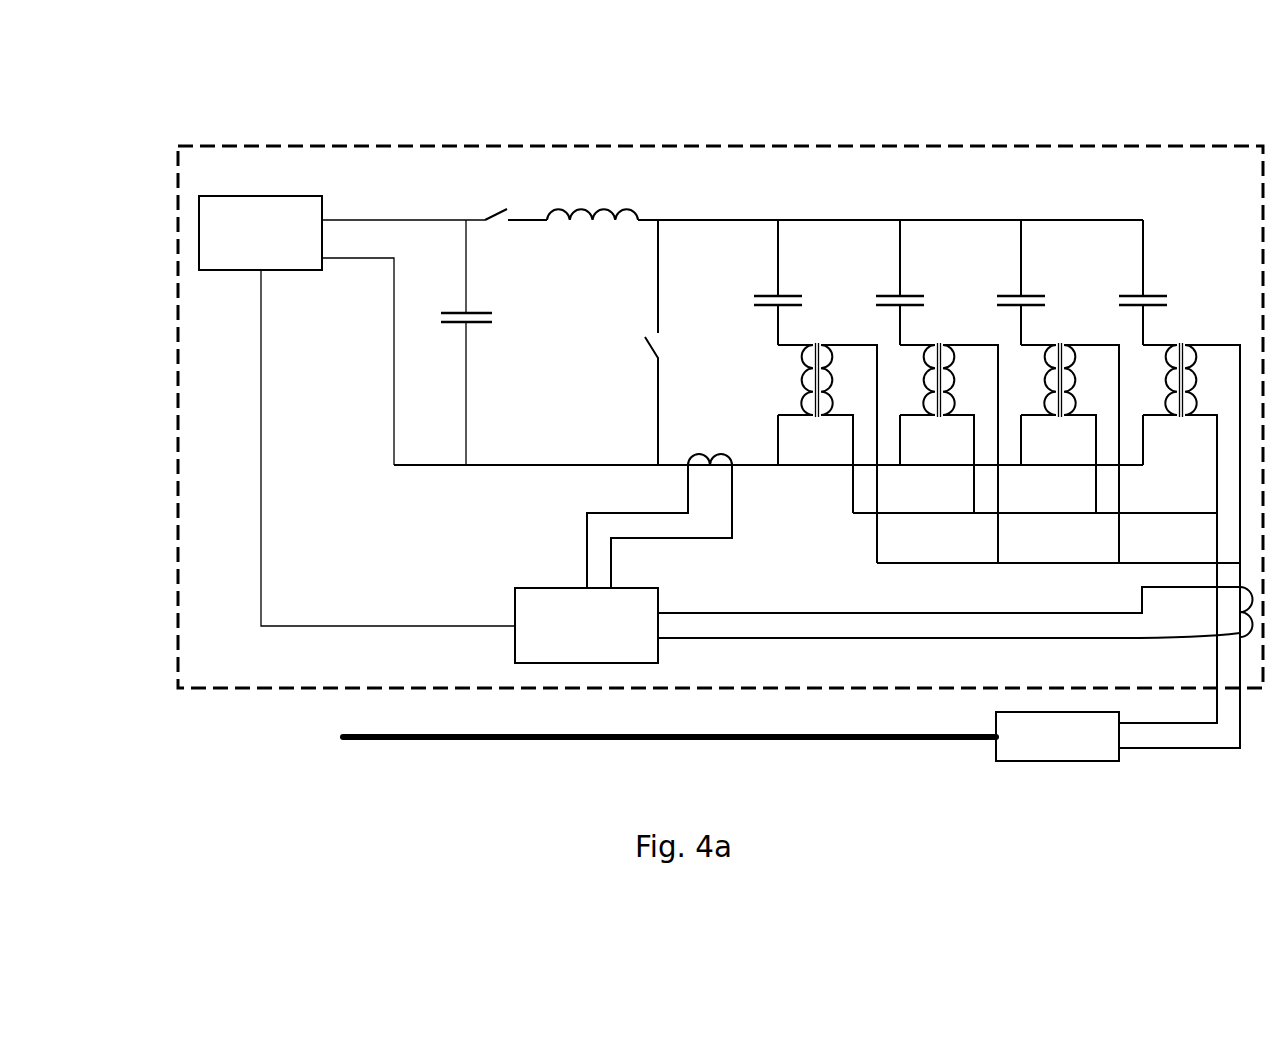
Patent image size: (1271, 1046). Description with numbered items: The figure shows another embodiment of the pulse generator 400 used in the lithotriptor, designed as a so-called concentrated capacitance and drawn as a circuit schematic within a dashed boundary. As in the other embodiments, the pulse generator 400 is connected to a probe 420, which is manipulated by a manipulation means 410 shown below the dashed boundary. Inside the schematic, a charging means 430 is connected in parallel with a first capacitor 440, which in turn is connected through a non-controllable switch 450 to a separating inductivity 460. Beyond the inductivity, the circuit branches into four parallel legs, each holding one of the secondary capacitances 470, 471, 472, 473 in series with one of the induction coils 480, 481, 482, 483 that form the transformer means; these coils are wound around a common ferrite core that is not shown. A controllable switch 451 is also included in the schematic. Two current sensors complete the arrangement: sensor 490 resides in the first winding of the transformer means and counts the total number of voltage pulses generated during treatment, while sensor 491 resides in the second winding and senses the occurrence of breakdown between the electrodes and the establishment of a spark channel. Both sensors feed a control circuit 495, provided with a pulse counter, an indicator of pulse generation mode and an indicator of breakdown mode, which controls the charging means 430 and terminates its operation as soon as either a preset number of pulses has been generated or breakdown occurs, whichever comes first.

The pulse generator 400 is at (703, 128).
The manipulation means 410 is at (1057, 736).
The probe 420 is at (669, 761).
The charging means 430 is at (357, 411).
The first capacitor 440 is at (448, 342).
The non-controllable switch 450 is at (508, 194).
The controllable switch 451 is at (683, 342).
The separating inductivity 460 is at (845, 194).
The secondary capacitance 470 is at (797, 342).
The secondary capacitance 471 is at (917, 342).
The secondary capacitance 472 is at (1038, 342).
The secondary capacitance 473 is at (1161, 342).
The induction coil 480 is at (827, 438).
The induction coil 481 is at (949, 438).
The induction coil 482 is at (1070, 437).
The induction coil 483 is at (1179, 530).
The current sensor 490 is at (661, 502).
The current sensor 491 is at (1204, 612).
The control circuit 495 is at (877, 625).